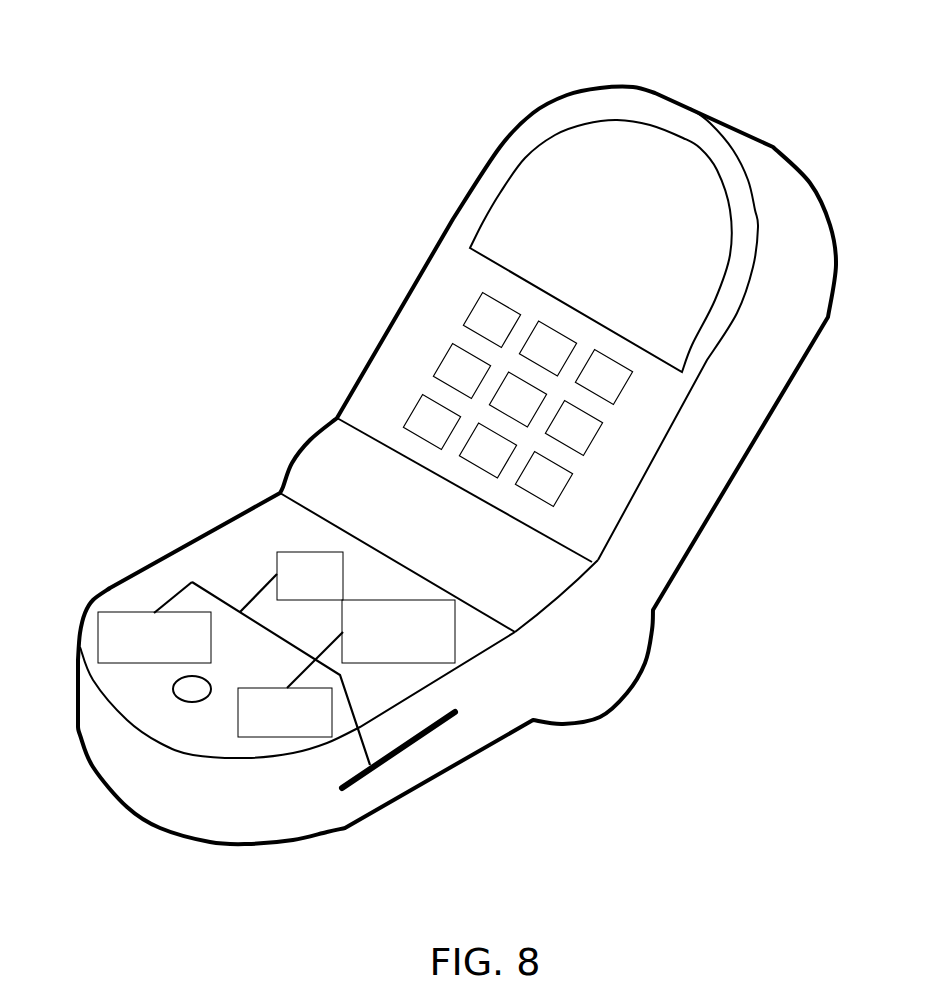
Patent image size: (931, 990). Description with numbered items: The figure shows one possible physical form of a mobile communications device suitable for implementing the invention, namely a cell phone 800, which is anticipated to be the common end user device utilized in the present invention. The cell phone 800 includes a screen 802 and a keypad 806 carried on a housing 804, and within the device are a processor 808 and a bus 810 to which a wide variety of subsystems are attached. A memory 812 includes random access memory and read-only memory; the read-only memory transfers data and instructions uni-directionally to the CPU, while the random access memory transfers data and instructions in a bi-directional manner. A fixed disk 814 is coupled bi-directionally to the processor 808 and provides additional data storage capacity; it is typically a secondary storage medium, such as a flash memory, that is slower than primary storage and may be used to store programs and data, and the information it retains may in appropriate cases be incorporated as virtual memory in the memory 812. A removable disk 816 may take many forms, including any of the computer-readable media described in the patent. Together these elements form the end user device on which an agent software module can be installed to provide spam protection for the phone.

The cell phone 800 is at (830, 150).
The screen 802 is at (565, 125).
The housing 804 is at (377, 337).
The keypad 806 is at (573, 343).
The processor 808 is at (310, 552).
The bus 810 is at (192, 582).
The memory 812 is at (98, 612).
The fixed disk 814 is at (398, 602).
The removable disk 816 is at (412, 747).